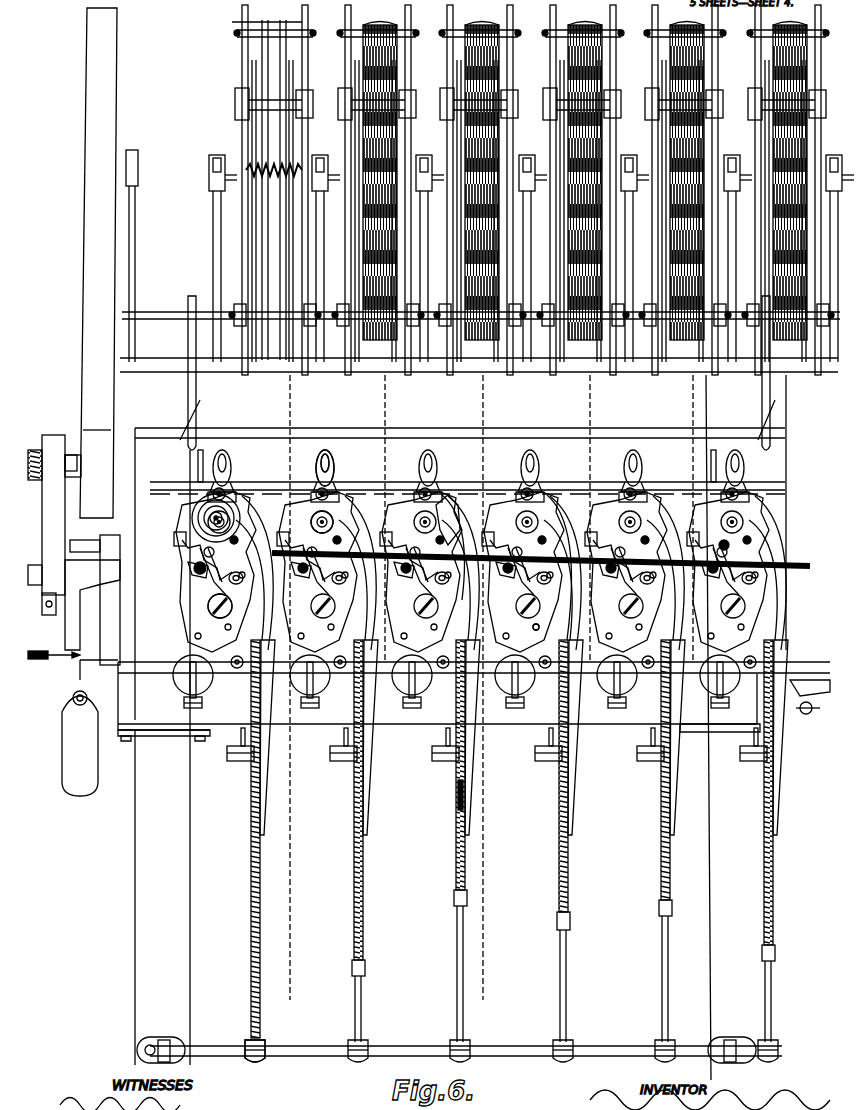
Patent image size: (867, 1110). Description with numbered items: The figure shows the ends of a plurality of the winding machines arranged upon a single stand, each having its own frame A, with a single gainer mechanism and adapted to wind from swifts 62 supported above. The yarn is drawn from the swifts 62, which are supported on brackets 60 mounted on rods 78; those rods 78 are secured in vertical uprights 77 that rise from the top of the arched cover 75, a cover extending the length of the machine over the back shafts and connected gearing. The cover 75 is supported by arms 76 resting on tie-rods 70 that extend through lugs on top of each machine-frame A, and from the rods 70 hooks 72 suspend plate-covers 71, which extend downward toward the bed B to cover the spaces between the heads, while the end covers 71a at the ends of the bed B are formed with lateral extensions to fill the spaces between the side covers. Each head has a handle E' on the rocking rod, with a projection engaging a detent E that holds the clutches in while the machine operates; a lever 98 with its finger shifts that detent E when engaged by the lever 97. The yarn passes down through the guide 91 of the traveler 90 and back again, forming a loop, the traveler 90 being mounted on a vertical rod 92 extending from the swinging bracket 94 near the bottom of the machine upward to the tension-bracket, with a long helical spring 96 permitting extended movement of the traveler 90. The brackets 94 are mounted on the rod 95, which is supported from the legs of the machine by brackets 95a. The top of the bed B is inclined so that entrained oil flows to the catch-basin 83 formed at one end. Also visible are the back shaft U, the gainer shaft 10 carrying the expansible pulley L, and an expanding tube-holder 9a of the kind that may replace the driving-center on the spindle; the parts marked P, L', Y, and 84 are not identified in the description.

The swift 62 is at (242, 34).
The bracket 60 is at (132, 240).
The rod 78 is at (172, 314).
The vertical upright 77 is at (186, 382).
The lever P is at (114, 428).
The expansible pulley L is at (49, 499).
The shaft 10 is at (72, 455).
The bracket L' is at (92, 597).
The back shaft U is at (42, 615).
The weight Y is at (80, 743).
The bed B is at (474, 701).
The arm 76 is at (197, 470).
The arched cover 75 is at (344, 462).
The tie-rod 70 is at (195, 492).
The hook 72 is at (445, 490).
The plate-cover 71 is at (407, 510).
The end cover 71a is at (175, 558).
The expanding tube-holder 9a is at (709, 535).
The handle E' is at (448, 516).
The detent E is at (527, 567).
The frame A is at (442, 599).
The lever 98 is at (531, 627).
The catch-basin 83 is at (798, 678).
The nut 84 is at (806, 716).
The helical spring 96 is at (250, 870).
The traveler 90 is at (468, 896).
The lever 97 is at (455, 790).
The guide 91 is at (556, 918).
The vertical rod 92 is at (570, 958).
The rod 95 is at (522, 1045).
The bracket 95a is at (162, 1040).
The swinging bracket 94 is at (264, 1044).